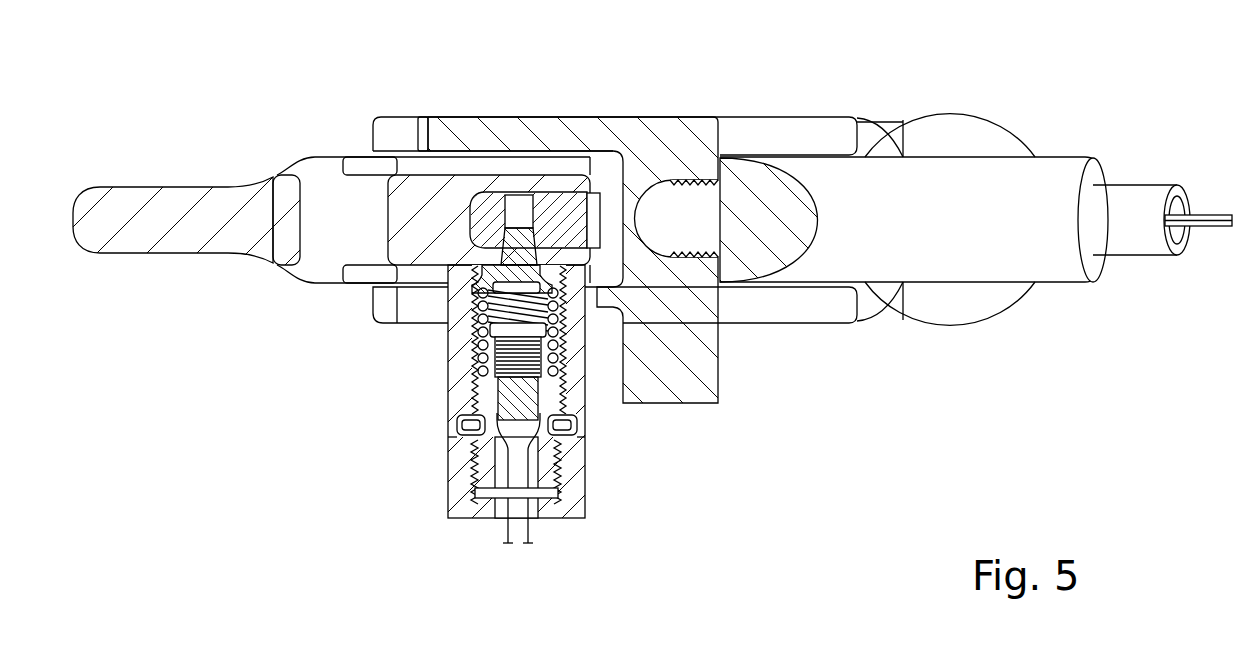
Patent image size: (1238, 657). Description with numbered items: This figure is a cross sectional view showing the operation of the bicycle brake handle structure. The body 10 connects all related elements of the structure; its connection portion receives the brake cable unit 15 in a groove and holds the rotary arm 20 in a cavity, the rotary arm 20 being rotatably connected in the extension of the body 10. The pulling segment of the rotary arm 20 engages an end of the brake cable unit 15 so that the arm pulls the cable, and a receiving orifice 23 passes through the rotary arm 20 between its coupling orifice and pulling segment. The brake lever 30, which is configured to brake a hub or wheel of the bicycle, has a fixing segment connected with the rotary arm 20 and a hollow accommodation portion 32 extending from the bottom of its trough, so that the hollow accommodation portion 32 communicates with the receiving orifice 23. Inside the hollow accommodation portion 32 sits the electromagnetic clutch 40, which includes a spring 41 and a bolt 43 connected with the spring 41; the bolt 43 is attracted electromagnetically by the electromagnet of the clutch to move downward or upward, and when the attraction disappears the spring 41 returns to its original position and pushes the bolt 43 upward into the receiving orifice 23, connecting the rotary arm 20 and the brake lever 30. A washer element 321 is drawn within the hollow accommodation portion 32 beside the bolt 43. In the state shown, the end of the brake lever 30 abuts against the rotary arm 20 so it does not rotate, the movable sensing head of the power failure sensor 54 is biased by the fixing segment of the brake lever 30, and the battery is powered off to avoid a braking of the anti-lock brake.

The body 10 is at (691, 115).
The brake cable unit 15 is at (1140, 200).
The rotary arm 20 is at (575, 186).
The receiving orifice 23 is at (522, 210).
The brake lever 30 is at (301, 155).
The hollow accommodation portion 32 is at (585, 386).
The washer 321 is at (577, 437).
The electromagnetic clutch 40 is at (422, 398).
The spring 41 is at (477, 329).
The bolt 43 is at (510, 257).
The power failure sensor 54 is at (942, 167).